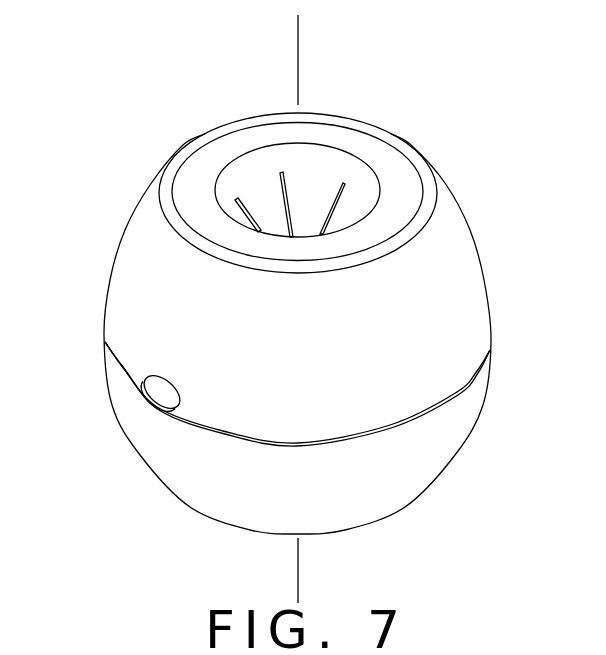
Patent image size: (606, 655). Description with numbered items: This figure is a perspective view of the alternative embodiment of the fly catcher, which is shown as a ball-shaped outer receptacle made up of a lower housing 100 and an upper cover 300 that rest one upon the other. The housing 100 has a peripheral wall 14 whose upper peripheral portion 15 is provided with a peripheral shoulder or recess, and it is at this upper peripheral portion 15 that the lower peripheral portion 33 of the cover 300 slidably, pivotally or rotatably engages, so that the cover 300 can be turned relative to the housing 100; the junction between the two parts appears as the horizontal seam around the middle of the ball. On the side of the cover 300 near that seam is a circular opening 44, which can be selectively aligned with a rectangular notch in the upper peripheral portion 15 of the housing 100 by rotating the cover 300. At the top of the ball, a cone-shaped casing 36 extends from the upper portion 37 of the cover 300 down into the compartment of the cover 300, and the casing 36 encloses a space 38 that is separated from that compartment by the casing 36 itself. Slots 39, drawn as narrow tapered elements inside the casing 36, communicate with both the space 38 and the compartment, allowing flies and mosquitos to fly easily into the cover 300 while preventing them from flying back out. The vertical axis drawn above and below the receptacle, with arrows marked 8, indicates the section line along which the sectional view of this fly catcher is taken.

The section line 8- 8 is at (314, 42).
The peripheral wall 14 is at (200, 492).
The upper peripheral portion 15 is at (483, 370).
The lower peripheral portion 33 is at (115, 325).
The cone-shaped casing 36 is at (330, 160).
The upper portion 37 is at (433, 188).
The space 38 is at (360, 188).
The slots 39 is at (278, 187).
The circular opening 44 is at (147, 403).
The housing 100 is at (447, 437).
The cover 300 is at (463, 258).